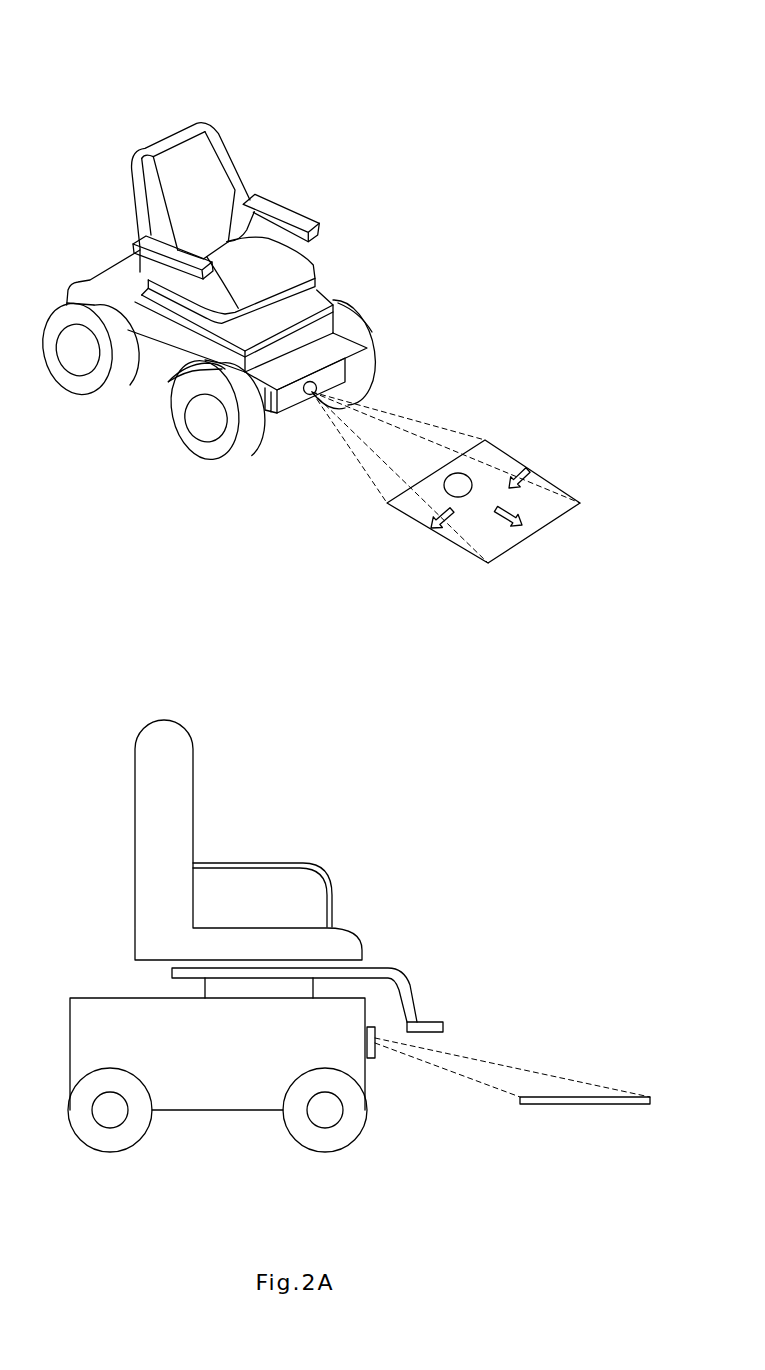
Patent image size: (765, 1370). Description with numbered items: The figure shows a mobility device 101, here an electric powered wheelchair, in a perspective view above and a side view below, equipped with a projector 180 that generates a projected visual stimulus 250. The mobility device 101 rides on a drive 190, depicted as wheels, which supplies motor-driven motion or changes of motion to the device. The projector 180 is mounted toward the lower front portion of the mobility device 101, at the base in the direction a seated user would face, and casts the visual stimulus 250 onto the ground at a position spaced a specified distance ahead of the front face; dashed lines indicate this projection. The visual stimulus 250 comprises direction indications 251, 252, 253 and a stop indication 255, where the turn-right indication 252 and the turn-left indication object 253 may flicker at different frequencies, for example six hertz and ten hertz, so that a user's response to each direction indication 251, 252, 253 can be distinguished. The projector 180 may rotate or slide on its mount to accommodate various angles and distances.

The mobility device 101 is at (318, 82).
The projector 180 is at (290, 400).
The drive 190 is at (82, 387).
The visual stimulus 250 is at (557, 487).
The direction indication 251 is at (522, 520).
The turn-right indication 252 is at (433, 520).
The turn-left indication object 253 is at (522, 472).
The stop indication 255 is at (457, 485).